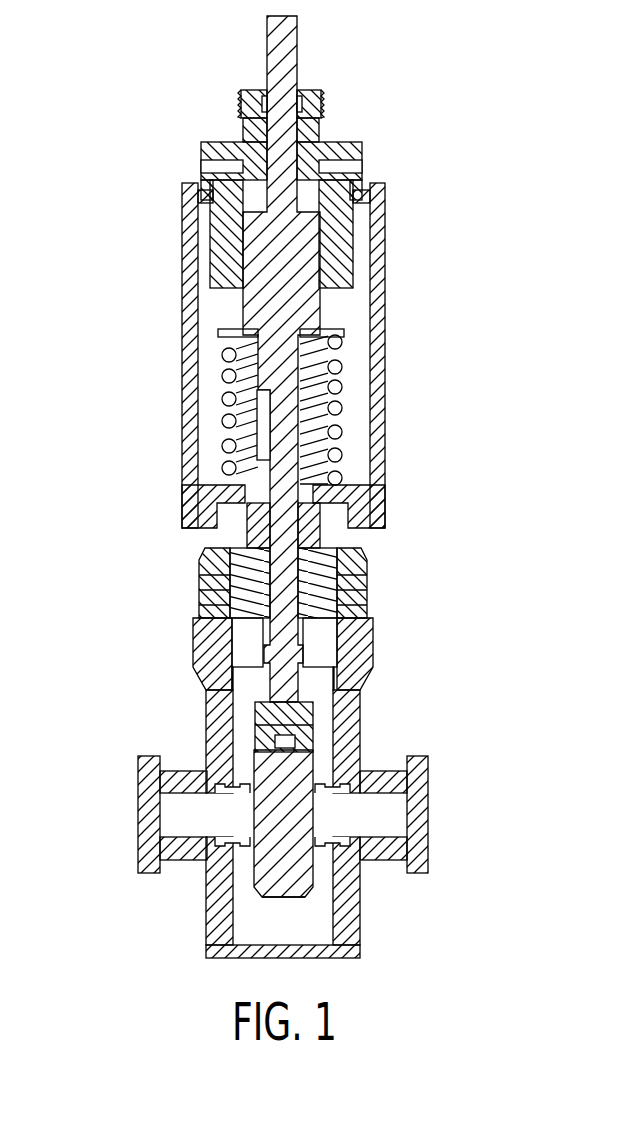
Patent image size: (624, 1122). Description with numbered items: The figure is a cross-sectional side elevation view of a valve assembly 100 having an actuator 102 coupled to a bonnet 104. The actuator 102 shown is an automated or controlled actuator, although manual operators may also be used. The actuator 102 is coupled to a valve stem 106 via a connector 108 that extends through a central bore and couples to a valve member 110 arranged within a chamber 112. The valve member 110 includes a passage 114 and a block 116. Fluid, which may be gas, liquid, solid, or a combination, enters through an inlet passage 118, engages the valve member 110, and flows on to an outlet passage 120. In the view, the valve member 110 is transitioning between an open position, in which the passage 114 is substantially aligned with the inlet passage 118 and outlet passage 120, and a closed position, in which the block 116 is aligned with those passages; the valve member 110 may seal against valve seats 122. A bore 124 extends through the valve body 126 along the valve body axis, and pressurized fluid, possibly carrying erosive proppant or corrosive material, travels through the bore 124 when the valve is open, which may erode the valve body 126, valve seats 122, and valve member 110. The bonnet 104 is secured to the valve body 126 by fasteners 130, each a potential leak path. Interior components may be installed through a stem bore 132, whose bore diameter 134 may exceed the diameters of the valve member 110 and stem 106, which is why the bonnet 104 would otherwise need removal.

The valve assembly 100 is at (125, 682).
The actuator 102 is at (128, 300).
The bonnet 104 is at (382, 593).
The valve stem 106 is at (320, 525).
The connector 108 is at (285, 472).
The valve member 110 is at (250, 878).
The chamber 112 is at (325, 922).
The passage 114 is at (277, 752).
The block 116 is at (305, 880).
The inlet passage 118 is at (157, 838).
The outlet passage 120 is at (418, 822).
The valve seats 122 is at (218, 783).
The bore 124 is at (160, 792).
The valve body 126 is at (350, 738).
The fasteners 130 is at (200, 557).
The stem bore 132 is at (313, 635).
The bore diameter 134 is at (255, 635).